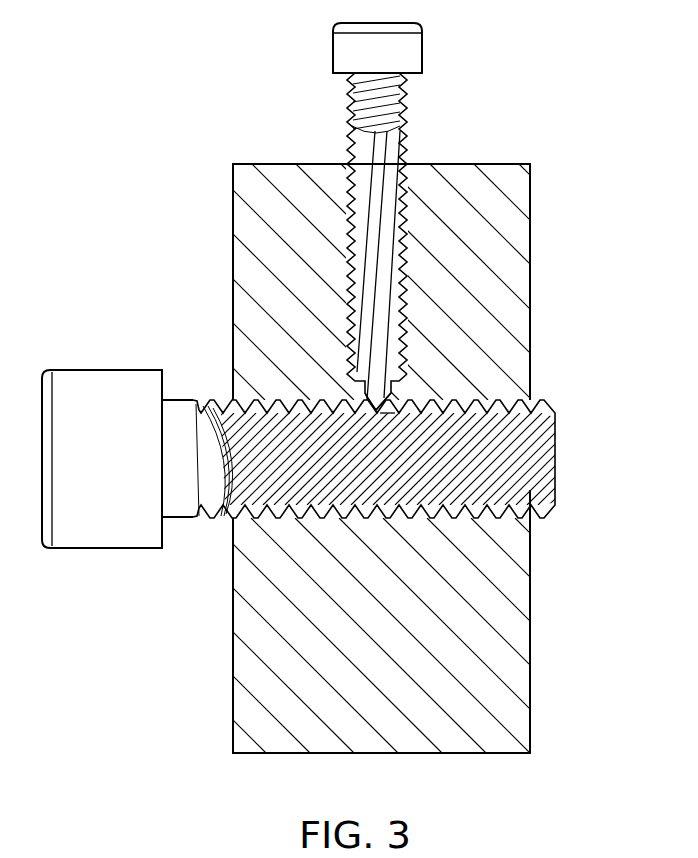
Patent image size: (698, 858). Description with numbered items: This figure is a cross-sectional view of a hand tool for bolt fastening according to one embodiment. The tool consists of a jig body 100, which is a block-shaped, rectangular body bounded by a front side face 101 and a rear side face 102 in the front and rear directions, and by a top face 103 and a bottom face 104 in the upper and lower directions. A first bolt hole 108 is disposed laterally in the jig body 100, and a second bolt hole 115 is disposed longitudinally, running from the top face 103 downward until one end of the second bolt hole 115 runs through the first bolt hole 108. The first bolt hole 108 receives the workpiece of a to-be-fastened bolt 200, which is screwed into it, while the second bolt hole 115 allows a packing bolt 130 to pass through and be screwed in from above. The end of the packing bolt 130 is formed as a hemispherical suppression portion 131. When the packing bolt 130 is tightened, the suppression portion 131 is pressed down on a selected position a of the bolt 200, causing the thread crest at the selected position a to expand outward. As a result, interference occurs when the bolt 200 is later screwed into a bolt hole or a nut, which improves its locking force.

The jig body 100 is at (363, 460).
The front side face 101 is at (232, 617).
The rear side face 102 is at (530, 680).
The top face 103 is at (277, 163).
The bottom face 104 is at (376, 754).
The first bolt hole 108 is at (517, 512).
The second bolt hole 115 is at (405, 222).
The packing bolt 130 is at (465, 216).
The hemispherical suppression portion 131 is at (402, 392).
The to-be-fastened bolt 200 is at (193, 522).
The selected position a is at (388, 416).